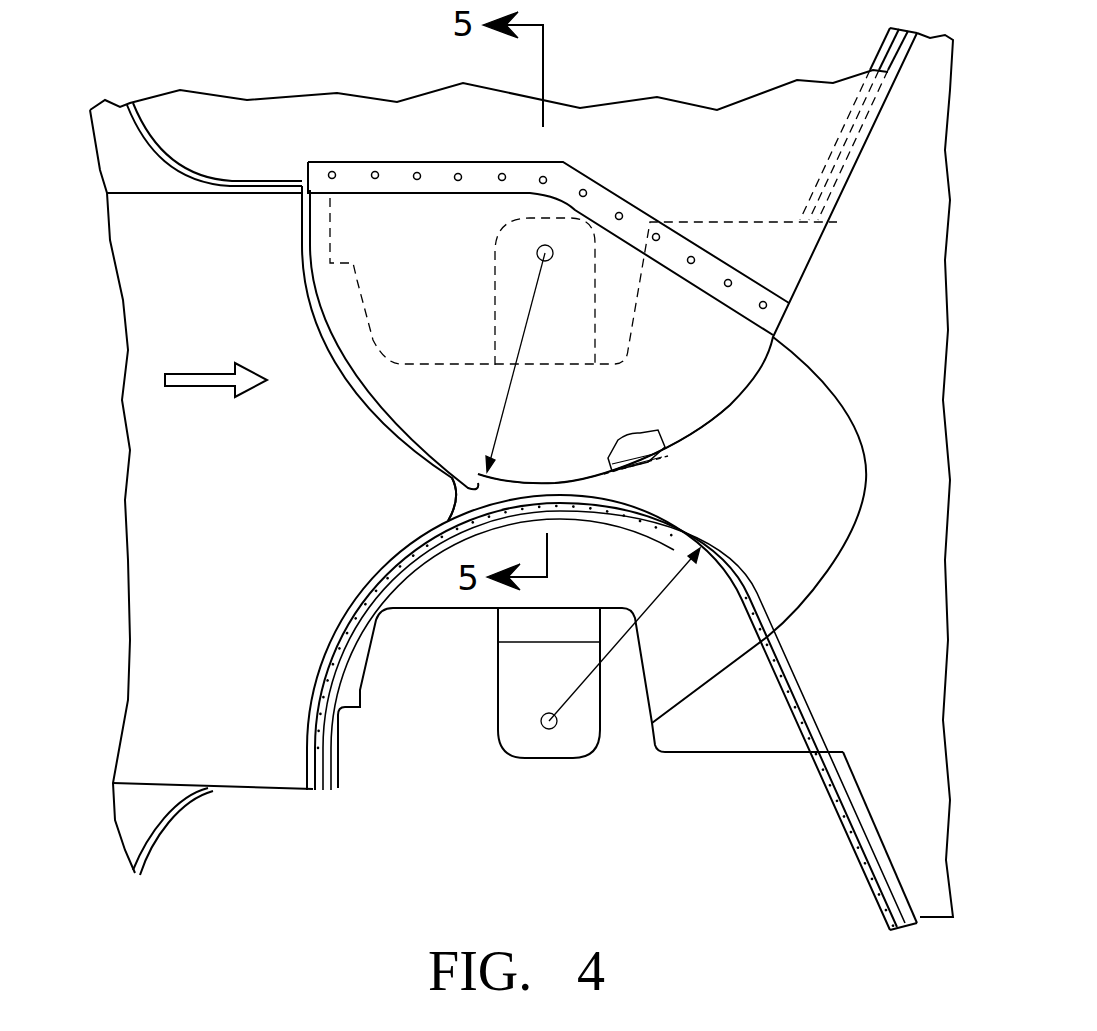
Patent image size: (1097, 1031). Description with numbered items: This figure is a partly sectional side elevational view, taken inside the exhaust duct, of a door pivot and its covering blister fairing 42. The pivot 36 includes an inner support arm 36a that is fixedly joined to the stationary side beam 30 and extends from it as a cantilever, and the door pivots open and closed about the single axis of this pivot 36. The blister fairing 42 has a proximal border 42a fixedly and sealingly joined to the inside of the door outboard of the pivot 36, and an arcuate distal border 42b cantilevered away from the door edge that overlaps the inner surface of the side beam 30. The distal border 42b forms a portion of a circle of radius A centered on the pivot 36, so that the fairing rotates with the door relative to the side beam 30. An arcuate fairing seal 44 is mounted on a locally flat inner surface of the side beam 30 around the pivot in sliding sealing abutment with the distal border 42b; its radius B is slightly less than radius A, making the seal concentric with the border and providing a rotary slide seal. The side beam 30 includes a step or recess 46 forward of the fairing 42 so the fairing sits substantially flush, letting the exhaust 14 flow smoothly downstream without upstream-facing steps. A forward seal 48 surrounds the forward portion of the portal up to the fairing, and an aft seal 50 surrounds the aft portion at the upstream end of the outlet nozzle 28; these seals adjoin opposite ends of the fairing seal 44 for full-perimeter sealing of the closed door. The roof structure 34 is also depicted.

The exhaust 14 is at (207, 372).
The outlet nozzle 28 is at (890, 352).
The side beam 30 is at (220, 555).
The roof structure 34 is at (739, 172).
The pivot 36 is at (488, 270).
The inner support arm 36a is at (493, 680).
The blister fairing 42 is at (685, 377).
The proximal border 42a is at (440, 180).
The distal border 42b is at (693, 418).
The fairing seal 44 is at (648, 465).
The recess 46 is at (437, 483).
The forward seal 48 is at (173, 167).
The aft seal 50 is at (882, 50).
The border radius A is at (519, 362).
The seal radius B is at (660, 604).